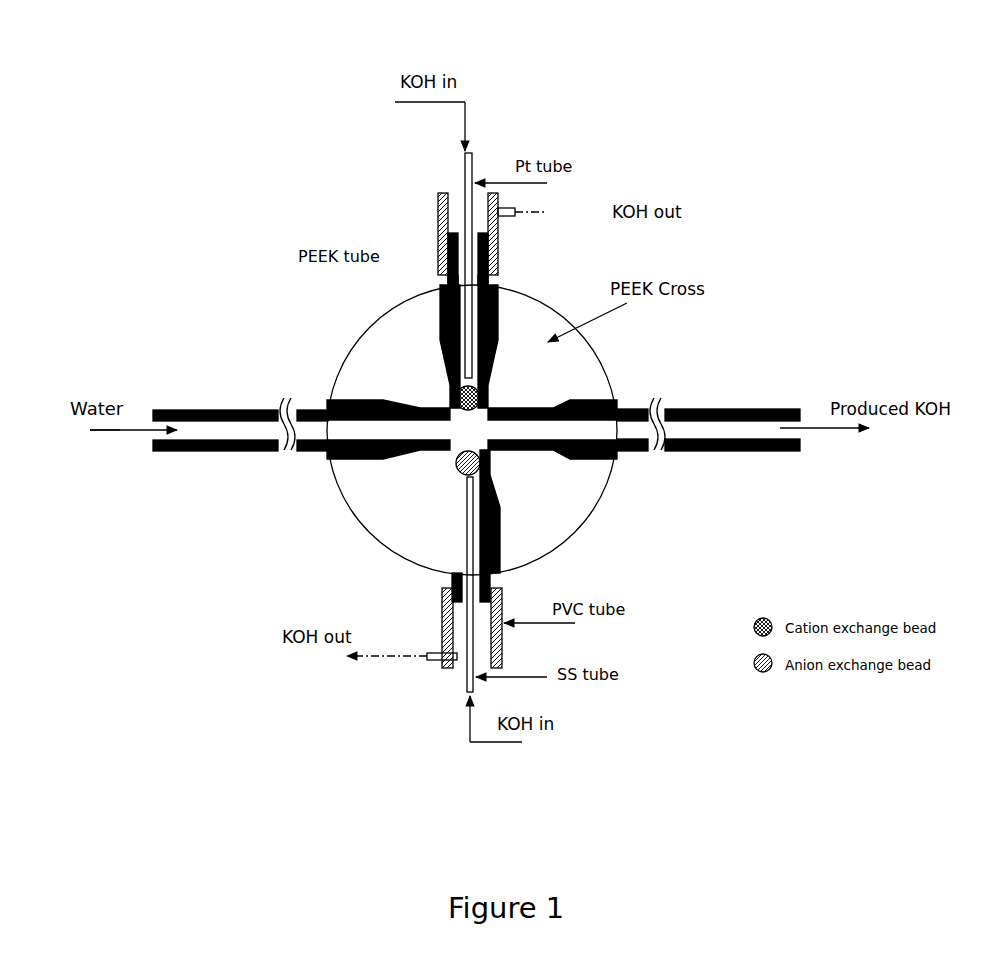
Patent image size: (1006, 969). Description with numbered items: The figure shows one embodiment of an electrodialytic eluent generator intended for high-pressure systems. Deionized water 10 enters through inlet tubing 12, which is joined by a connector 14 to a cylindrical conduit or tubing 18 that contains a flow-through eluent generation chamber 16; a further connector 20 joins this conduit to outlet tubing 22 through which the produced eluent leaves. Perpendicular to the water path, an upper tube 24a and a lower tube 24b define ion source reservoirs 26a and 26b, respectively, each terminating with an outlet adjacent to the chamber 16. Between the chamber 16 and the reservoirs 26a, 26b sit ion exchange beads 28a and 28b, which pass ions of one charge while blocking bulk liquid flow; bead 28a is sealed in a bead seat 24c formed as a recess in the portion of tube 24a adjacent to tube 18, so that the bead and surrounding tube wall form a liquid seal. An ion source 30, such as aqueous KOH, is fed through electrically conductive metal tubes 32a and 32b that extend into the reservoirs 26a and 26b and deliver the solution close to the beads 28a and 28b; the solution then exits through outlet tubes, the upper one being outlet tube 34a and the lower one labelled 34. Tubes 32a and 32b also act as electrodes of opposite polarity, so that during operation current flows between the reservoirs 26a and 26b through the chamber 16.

The deionized water 10 is at (118, 387).
The tubing 12 is at (205, 408).
The connector 14 is at (287, 392).
The eluent generation chamber 16 is at (380, 425).
The cylindrical conduit 18 is at (407, 457).
The connector 20 is at (657, 392).
The outlet tubing 22 is at (735, 413).
The tube 24a is at (438, 320).
The tube 24b is at (493, 579).
The bead seat 24c is at (450, 396).
The ion source reservoir 26a is at (498, 287).
The ion source reservoir 26b is at (475, 498).
The ion exchange bead 28a is at (490, 393).
The ion exchange bead 28b is at (487, 467).
The ion source 30 is at (418, 67).
The electrically conductive tube 32a is at (472, 165).
The electrically conductive tube 32b is at (473, 654).
The KOH outlet fitting 34 is at (425, 648).
The outlet tube 34a is at (512, 207).